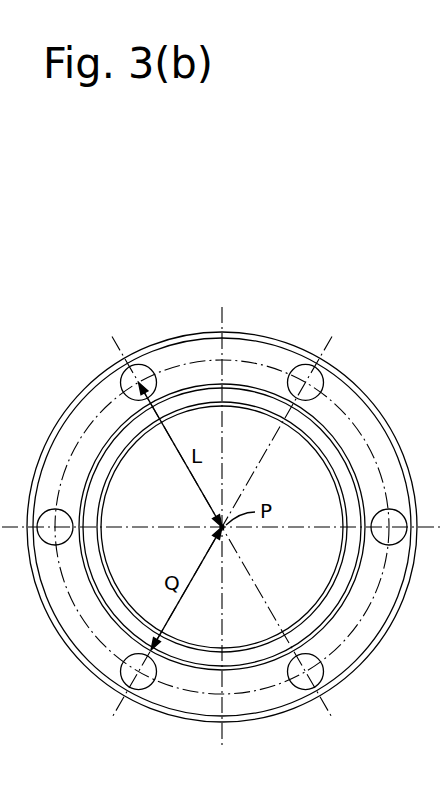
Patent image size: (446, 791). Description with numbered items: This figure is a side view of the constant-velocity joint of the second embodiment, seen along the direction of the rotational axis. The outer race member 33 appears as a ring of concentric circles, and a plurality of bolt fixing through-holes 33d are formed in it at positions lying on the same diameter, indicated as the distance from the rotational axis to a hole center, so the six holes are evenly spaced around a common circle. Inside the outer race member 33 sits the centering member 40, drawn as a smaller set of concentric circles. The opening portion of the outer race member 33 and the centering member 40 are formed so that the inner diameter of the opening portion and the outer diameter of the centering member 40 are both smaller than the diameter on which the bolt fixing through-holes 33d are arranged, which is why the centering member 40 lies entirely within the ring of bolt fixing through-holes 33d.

The outer race member 33 is at (173, 352).
The bolt fixing through-holes 33d is at (297, 373).
The centering member 40 is at (246, 640).